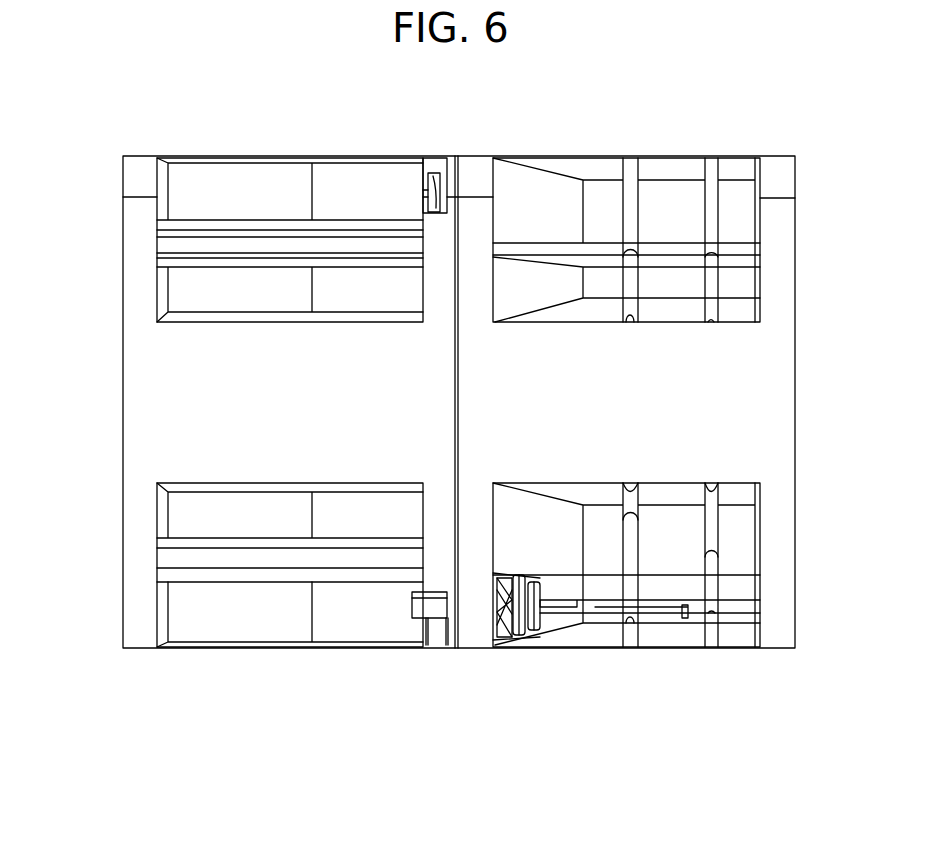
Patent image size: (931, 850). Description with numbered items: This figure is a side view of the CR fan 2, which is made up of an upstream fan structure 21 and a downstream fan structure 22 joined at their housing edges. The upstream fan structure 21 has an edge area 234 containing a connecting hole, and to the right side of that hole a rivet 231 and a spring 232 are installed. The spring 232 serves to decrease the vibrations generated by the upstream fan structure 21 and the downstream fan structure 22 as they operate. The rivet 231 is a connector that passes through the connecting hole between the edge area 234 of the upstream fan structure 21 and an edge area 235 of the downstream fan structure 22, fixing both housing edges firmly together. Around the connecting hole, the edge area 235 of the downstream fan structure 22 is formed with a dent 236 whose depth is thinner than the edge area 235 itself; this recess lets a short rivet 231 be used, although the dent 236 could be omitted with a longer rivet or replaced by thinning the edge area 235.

The CR fan 2 is at (467, 421).
The upstream fan structure 21 is at (690, 372).
The downstream fan structure 22 is at (243, 372).
The rivet 231 is at (412, 613).
The spring 232 is at (506, 625).
The edge area 234 is at (478, 632).
The edge area 235 is at (428, 578).
The dent 236 is at (446, 636).